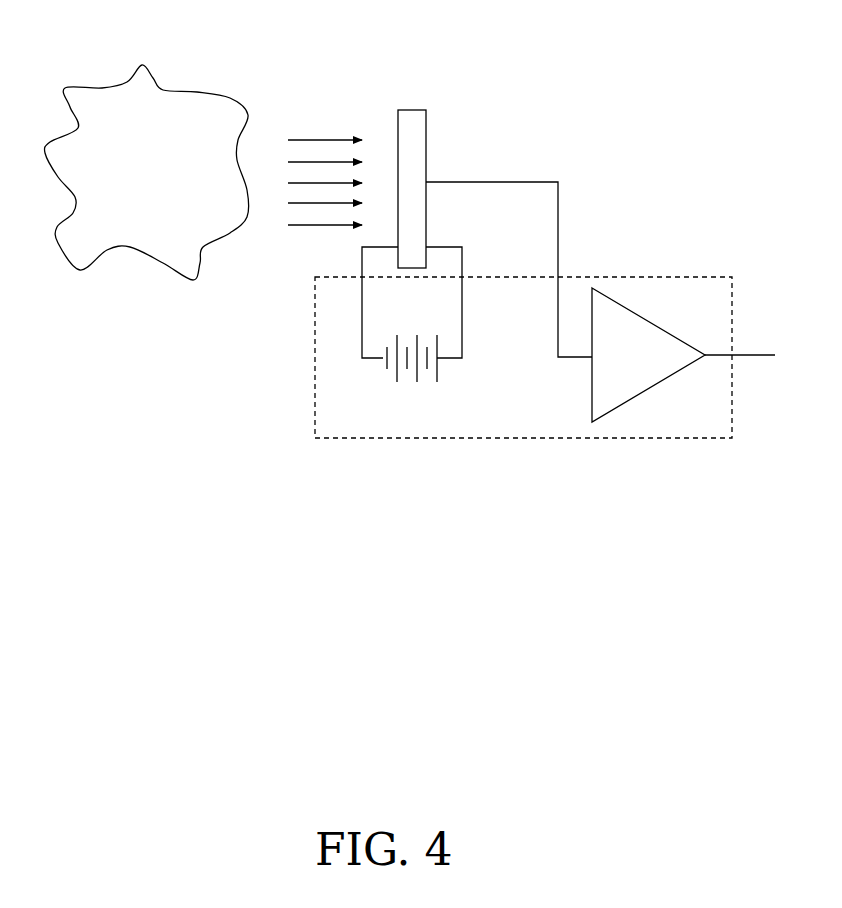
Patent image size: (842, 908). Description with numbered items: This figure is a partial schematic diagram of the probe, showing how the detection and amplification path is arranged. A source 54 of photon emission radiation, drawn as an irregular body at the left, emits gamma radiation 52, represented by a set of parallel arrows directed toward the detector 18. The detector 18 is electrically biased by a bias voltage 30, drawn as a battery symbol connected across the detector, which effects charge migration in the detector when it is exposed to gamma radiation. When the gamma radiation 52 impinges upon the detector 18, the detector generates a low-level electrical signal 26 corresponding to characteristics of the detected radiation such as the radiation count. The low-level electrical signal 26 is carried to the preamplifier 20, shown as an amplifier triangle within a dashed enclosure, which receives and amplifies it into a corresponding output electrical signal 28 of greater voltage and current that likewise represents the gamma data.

The source of photon emission radiation 54 is at (162, 171).
The gamma radiation 52 is at (317, 118).
The detector 18 is at (411, 110).
The low-level electrical signal 26 is at (500, 181).
The bias voltage 30 is at (437, 372).
The preamplifier 20 is at (655, 276).
The output electrical signal 28 is at (743, 353).